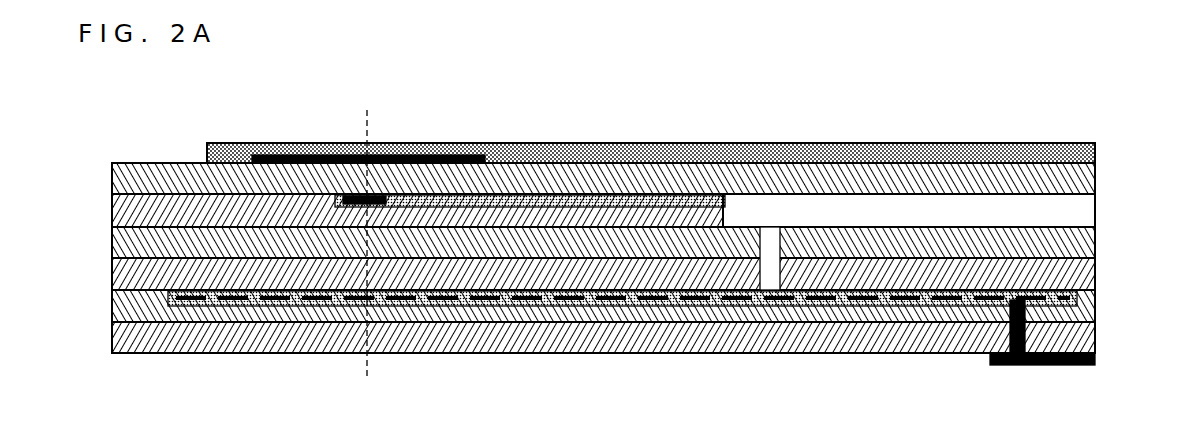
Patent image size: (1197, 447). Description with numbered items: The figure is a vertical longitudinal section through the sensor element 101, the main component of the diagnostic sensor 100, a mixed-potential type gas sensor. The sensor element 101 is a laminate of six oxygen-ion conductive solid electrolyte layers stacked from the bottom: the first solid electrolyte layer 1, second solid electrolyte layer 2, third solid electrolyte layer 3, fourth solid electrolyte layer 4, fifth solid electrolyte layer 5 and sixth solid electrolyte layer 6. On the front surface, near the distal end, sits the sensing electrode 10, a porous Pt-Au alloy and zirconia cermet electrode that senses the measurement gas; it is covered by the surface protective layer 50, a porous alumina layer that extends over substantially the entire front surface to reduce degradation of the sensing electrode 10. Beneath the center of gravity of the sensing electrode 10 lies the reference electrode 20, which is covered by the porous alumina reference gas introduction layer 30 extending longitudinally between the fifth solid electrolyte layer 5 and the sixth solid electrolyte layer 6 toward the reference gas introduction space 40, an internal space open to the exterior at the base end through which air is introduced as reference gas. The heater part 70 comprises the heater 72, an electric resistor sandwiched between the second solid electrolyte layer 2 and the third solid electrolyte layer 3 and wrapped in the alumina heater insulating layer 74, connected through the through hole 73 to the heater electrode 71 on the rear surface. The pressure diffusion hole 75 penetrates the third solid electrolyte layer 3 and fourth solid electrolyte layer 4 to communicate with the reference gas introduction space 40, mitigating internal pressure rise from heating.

The diagnostic sensor 100 is at (990, 124).
The sensor element 101 is at (170, 163).
The first solid electrolyte layer 1 is at (1084, 343).
The second solid electrolyte layer 2 is at (1084, 314).
The third solid electrolyte layer 3 is at (1084, 276).
The fourth solid electrolyte layer 4 is at (1084, 244).
The fifth solid electrolyte layer 5 is at (122, 214).
The sixth solid electrolyte layer 6 is at (1084, 182).
The sensing electrode 10 is at (455, 155).
The reference electrode 20 is at (378, 198).
The reference gas introduction layer 30 is at (584, 200).
The reference gas introduction space 40 is at (1084, 210).
The surface protective layer 50 is at (686, 150).
The heater part 70 is at (893, 312).
The heater electrode 71 is at (1069, 366).
The heater 72 is at (232, 306).
The through hole 73 is at (1010, 337).
The heater insulating layer 74 is at (182, 300).
The pressure diffusion hole 75 is at (767, 232).